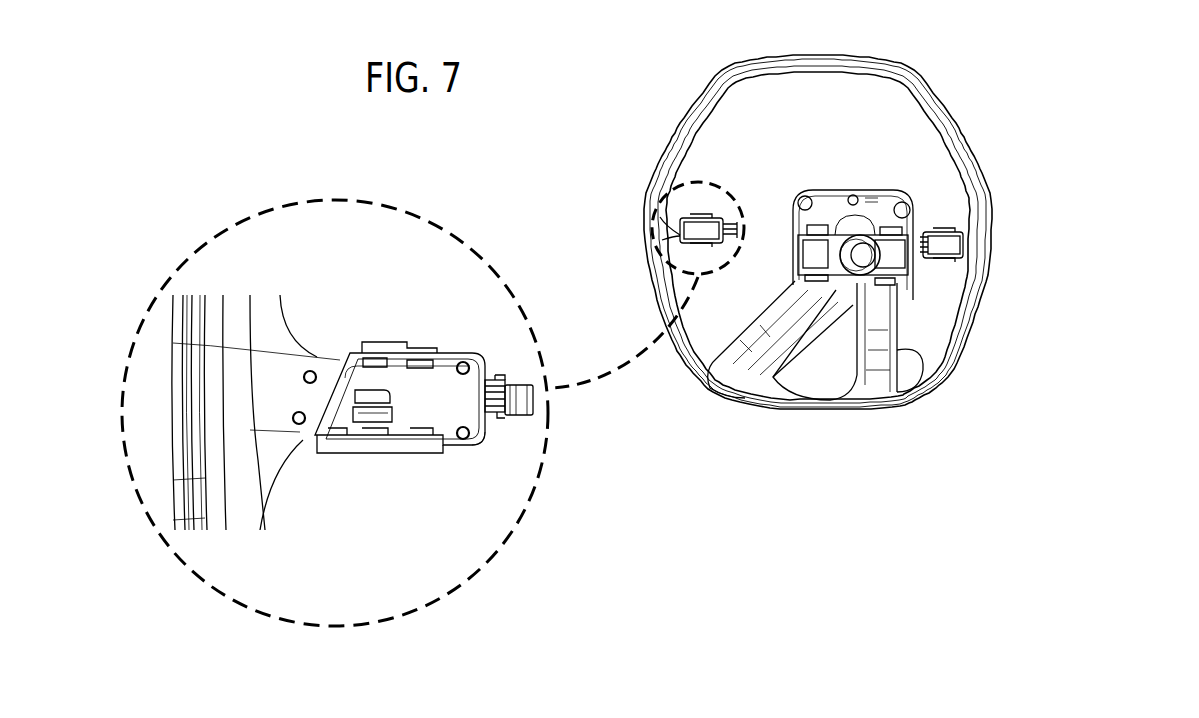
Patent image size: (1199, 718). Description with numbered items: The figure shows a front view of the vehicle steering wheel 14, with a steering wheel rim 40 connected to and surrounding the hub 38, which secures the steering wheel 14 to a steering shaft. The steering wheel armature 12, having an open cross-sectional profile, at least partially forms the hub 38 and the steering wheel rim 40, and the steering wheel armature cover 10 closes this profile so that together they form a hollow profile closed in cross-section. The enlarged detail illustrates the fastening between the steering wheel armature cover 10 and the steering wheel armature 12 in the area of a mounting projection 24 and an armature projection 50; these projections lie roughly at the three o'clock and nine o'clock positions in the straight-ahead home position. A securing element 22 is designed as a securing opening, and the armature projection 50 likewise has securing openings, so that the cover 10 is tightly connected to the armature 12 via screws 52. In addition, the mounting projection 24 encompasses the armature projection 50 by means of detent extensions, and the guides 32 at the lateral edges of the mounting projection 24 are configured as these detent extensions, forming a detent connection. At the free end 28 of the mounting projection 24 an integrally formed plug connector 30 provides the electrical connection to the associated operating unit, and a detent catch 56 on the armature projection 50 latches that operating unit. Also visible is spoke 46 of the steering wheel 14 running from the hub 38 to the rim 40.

The steering wheel armature cover 10 is at (590, 267).
The steering wheel armature 12 is at (893, 387).
The vehicle steering wheel 14 is at (927, 66).
The securing element 22 is at (298, 435).
The mounting projection 24 is at (933, 216).
The free end 28 is at (510, 444).
The plug connector 30 is at (513, 380).
The guides 32 is at (415, 342).
The hub 38 is at (840, 210).
The steering wheel rim 40 is at (683, 124).
The spoke 46 is at (777, 333).
The armature projection 50 is at (942, 258).
The screws 52 is at (310, 370).
The detent catch 56 is at (372, 392).